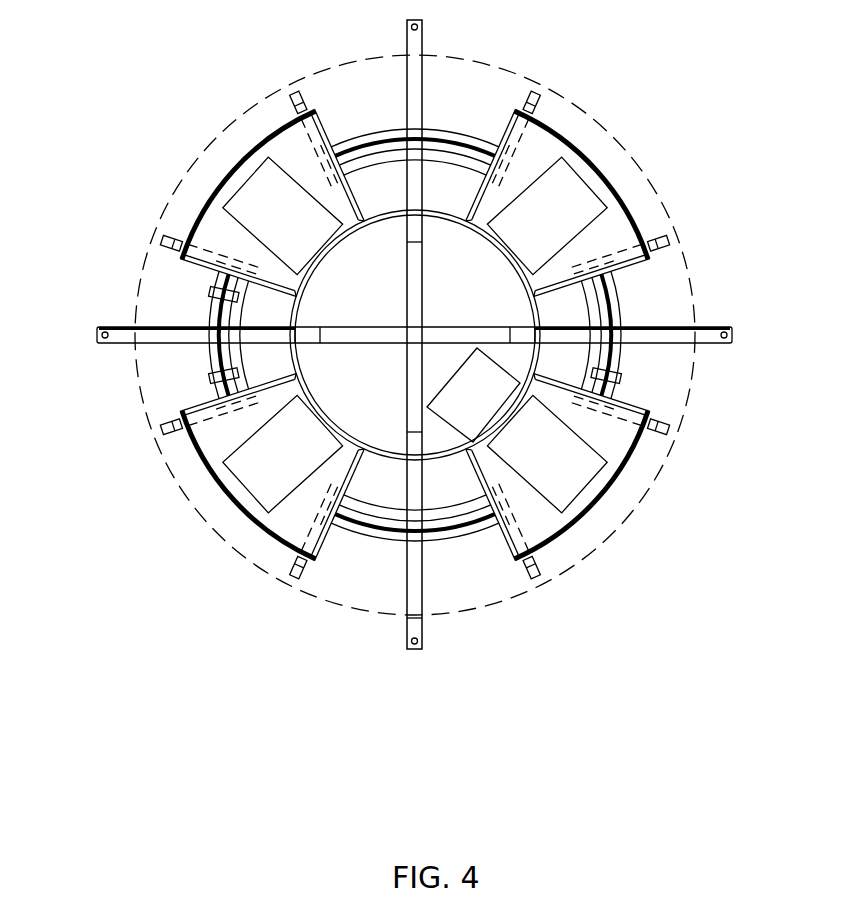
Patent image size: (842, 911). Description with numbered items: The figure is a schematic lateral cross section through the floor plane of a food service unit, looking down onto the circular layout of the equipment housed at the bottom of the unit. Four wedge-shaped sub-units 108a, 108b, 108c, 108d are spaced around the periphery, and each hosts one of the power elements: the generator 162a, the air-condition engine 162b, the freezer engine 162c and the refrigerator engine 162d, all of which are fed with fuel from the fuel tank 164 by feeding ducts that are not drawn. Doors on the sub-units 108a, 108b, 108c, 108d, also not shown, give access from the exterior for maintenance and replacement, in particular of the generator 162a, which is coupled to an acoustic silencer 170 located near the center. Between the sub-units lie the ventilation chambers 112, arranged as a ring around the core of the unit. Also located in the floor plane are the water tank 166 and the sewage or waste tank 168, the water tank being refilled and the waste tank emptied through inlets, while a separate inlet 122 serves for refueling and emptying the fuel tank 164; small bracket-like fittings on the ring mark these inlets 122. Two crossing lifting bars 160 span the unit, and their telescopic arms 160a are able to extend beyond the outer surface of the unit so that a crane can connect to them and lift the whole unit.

The sub-unit 108a is at (612, 445).
The sub-unit 108b is at (297, 518).
The sub-unit 108c is at (293, 157).
The sub-unit 108d is at (528, 150).
The ventilation chambers 112 is at (378, 180).
The inlet 122 is at (212, 297).
The lifting bars 160 is at (410, 395).
The telescopic arms 160a is at (413, 650).
The generator 162a is at (567, 475).
The air-condition engine 162b is at (265, 480).
The freezer engine 162c is at (250, 217).
The refrigerator engine 162d is at (570, 210).
The fuel tank 164 is at (585, 355).
The water tank 166 is at (213, 270).
The waste tank 168 is at (237, 357).
The acoustic silencer 170 is at (455, 405).